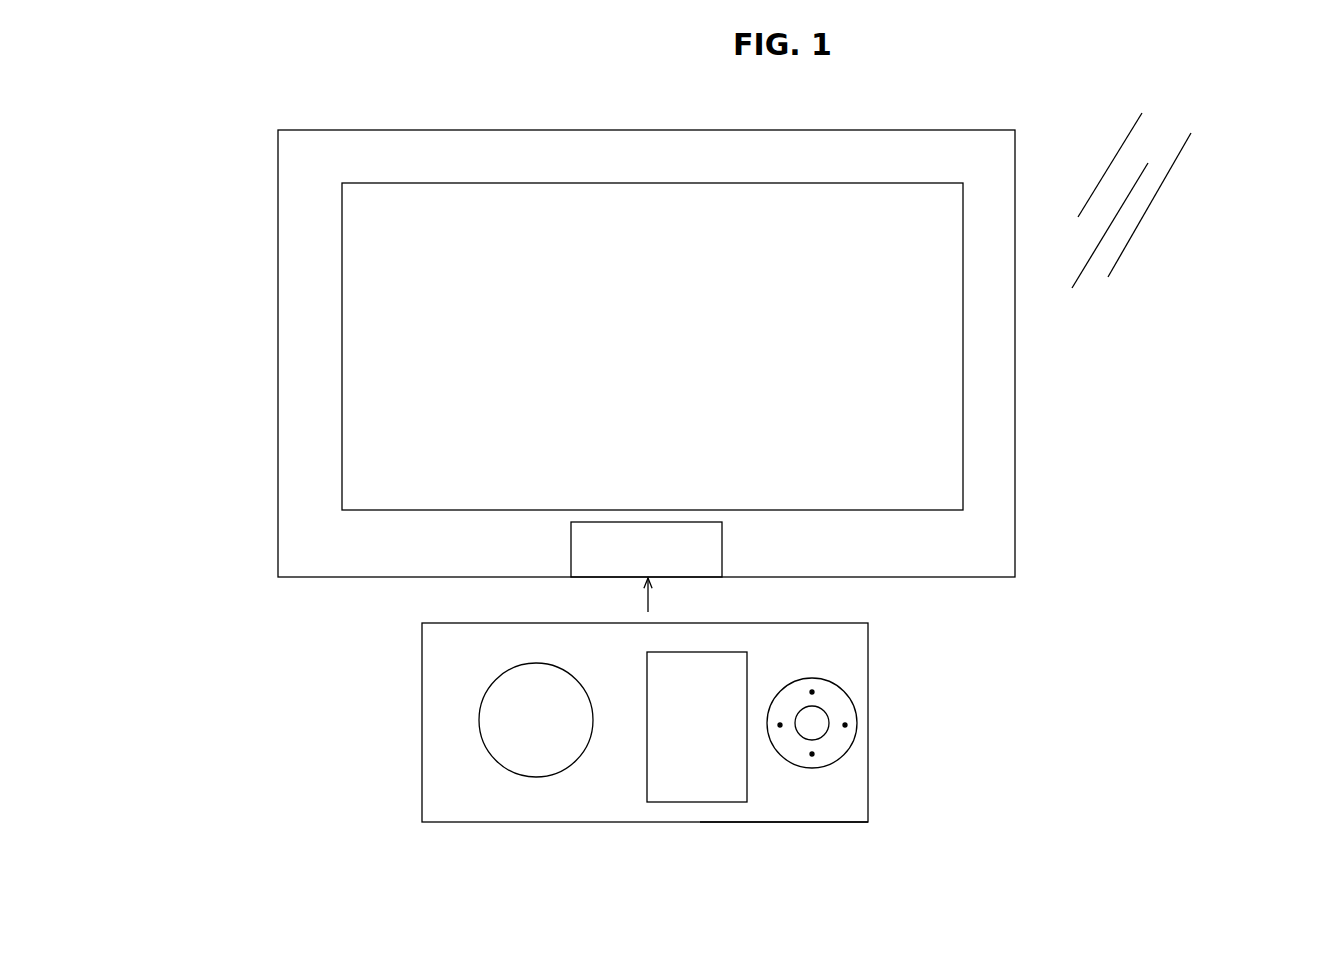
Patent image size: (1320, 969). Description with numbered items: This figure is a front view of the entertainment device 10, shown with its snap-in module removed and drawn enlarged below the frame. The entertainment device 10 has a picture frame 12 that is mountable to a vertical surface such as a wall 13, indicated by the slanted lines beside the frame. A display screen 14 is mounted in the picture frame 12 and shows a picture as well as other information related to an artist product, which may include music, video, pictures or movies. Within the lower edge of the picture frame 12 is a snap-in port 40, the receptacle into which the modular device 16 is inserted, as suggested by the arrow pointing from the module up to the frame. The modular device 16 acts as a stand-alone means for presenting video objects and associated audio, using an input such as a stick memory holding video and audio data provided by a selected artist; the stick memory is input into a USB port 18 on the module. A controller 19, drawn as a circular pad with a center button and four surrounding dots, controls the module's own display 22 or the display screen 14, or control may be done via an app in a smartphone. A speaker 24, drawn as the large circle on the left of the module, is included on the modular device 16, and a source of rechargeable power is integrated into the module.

The entertainment device 10 is at (306, 653).
The picture frame 12 is at (1052, 334).
The wall 13 is at (1166, 206).
The display screen 14 is at (672, 340).
The modular device 16 is at (924, 701).
The USB port 18 is at (807, 830).
The controller 19 is at (846, 757).
The display 22 is at (693, 806).
The speaker 24 is at (462, 761).
The snap-in port 40 is at (588, 488).